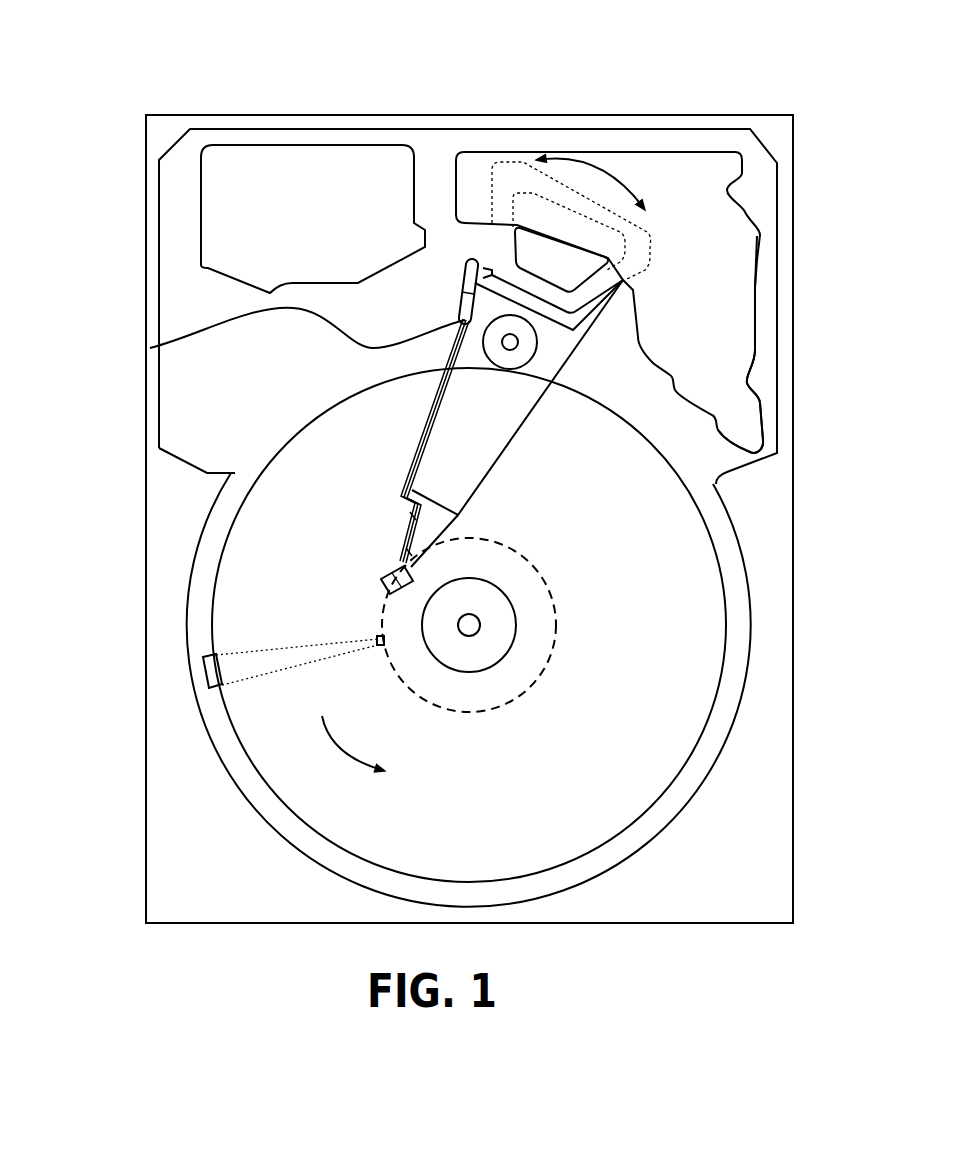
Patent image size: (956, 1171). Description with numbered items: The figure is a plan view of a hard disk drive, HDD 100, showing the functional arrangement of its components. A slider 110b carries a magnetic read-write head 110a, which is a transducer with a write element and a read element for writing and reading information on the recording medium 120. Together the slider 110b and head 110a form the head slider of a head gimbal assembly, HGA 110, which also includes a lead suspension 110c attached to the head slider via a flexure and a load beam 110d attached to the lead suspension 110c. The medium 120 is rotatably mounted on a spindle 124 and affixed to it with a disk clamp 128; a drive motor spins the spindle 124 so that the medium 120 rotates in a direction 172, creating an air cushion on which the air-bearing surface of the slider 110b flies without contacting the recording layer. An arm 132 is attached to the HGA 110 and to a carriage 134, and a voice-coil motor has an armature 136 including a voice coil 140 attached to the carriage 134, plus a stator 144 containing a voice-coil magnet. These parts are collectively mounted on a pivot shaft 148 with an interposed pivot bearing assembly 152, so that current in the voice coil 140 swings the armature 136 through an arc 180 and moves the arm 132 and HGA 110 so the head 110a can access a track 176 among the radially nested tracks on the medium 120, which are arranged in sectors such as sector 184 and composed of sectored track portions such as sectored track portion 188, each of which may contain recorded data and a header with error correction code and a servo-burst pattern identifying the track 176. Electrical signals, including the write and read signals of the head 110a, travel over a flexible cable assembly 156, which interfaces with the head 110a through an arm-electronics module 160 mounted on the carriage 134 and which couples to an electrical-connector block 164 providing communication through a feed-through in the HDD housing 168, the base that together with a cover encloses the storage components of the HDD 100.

The hard disk drive 100 is at (95, 24).
The head gimbal assembly 110 is at (70, 432).
The magnetic read-write head 110a is at (385, 592).
The slider 110b is at (400, 570).
The lead suspension 110c is at (400, 523).
The load beam 110d is at (400, 502).
The recording medium 120 is at (655, 578).
The spindle 124 is at (482, 623).
The disk clamp 128 is at (480, 650).
The arm 132 is at (462, 458).
The carriage 134 is at (528, 368).
The armature 136 is at (492, 270).
The voice coil 140 is at (505, 233).
The stator 144 is at (720, 245).
The pivot shaft 148 is at (517, 342).
The pivot bearing assembly 152 is at (523, 357).
The flexible cable assembly 156 is at (150, 348).
The arm-electronics module 160 is at (465, 303).
The electrical-connector block 164 is at (220, 224).
The HDD housing 168 is at (791, 120).
The direction 172 is at (360, 733).
The track 176 is at (532, 563).
The arc 180 is at (590, 172).
The sector 184 is at (203, 678).
The sectored track portion 188 is at (377, 640).